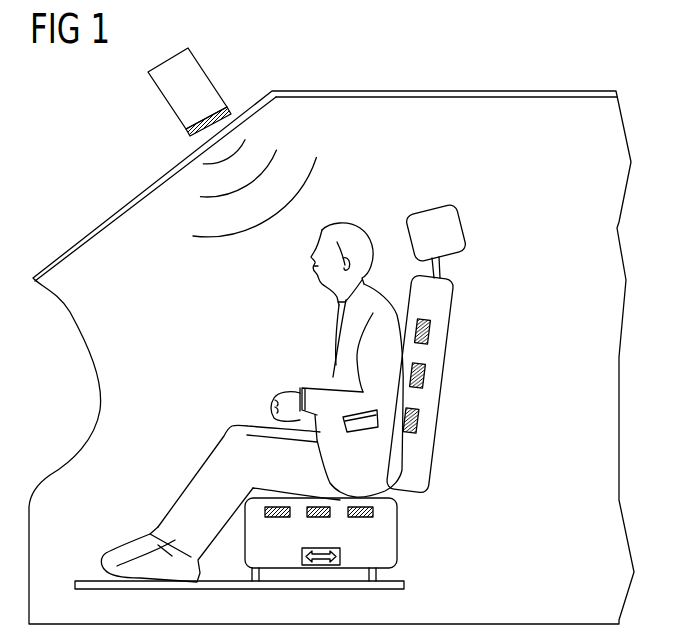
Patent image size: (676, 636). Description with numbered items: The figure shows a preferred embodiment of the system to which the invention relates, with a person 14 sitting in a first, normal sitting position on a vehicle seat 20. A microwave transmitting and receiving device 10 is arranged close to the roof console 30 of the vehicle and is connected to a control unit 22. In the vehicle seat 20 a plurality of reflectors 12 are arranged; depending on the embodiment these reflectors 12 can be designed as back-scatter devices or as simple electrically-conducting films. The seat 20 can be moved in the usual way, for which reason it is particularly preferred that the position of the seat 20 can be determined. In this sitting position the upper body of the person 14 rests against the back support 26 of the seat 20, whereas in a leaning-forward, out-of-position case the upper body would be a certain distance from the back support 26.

The microwave transmitting and receiving device 10 is at (228, 107).
The reflectors 12 is at (429, 332).
The person 14 is at (340, 332).
The vehicle seat 20 is at (527, 493).
The control unit 22 is at (200, 78).
The back support 26 is at (446, 297).
The roof console 30 is at (348, 90).